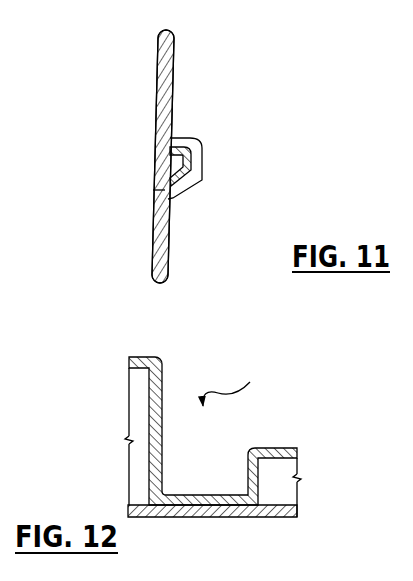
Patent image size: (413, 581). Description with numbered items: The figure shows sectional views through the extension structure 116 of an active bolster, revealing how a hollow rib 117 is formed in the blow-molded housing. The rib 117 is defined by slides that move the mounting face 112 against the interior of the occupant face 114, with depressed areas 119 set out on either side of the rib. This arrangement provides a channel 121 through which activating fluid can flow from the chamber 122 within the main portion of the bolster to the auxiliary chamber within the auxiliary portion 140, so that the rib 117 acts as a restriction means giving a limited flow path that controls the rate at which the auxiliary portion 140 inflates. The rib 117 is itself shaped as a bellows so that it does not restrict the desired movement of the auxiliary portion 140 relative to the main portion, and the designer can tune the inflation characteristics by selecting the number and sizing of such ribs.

In FIG. 11, the mounting face 112 is at (175, 86).
In FIG. 12, the mounting face 112 is at (230, 518).
In FIG. 11, the occupant face 114 is at (153, 190).
In FIG. 12, the extension structure 116 is at (241, 380).
In FIG. 11, the hollow rib 117 is at (196, 140).
In FIG. 11, the depressed areas 119 is at (174, 59).
In FIG. 12, the depressed areas 119 is at (182, 494).
In FIG. 11, the channel 121 is at (164, 158).
In FIG. 12, the chamber 122 is at (283, 494).
In FIG. 12, the auxiliary portion 140 is at (143, 357).